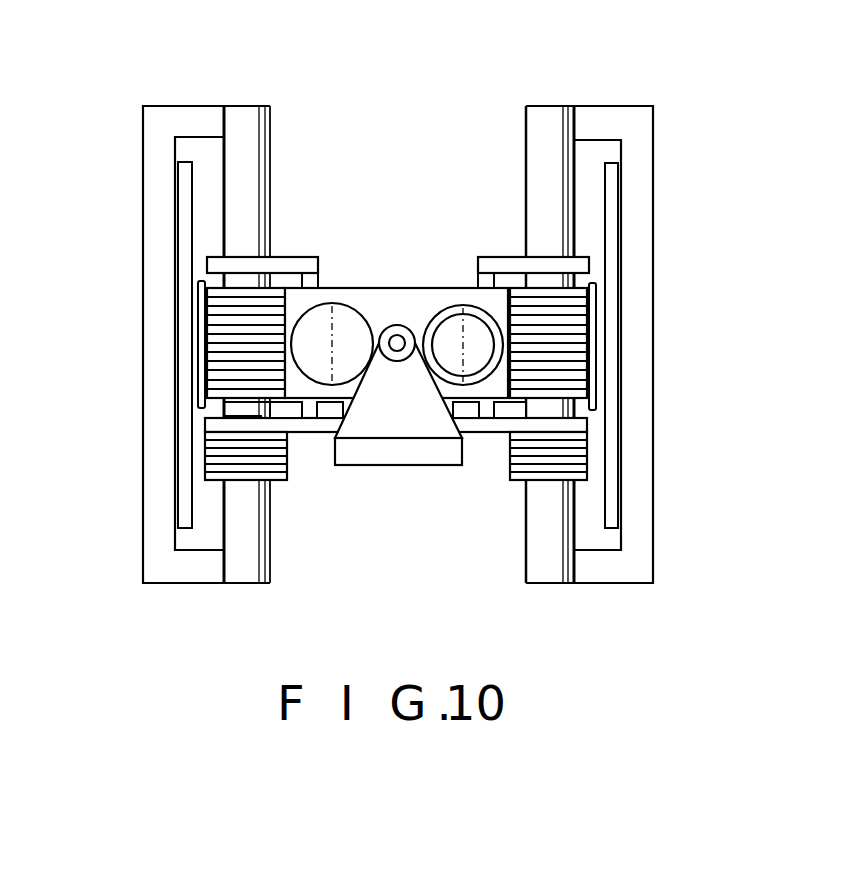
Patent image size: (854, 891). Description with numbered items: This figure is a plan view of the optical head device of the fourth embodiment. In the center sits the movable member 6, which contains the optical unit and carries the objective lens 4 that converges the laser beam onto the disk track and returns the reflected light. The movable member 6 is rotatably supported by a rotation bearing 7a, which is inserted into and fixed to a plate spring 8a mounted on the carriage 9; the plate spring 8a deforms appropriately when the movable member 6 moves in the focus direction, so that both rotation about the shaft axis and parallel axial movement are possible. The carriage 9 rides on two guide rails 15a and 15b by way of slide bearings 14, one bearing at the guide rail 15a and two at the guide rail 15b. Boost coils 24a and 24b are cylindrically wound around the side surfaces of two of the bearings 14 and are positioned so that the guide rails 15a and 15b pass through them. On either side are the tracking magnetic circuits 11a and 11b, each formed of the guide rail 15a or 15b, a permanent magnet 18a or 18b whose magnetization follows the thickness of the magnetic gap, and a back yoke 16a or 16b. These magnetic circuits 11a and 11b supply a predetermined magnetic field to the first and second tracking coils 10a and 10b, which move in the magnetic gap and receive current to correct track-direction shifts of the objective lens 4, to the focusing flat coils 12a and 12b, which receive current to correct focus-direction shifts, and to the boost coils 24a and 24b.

The tracking magnetic circuit 11b is at (234, 293).
The tracking magnetic circuit 11a is at (567, 293).
The guide rail 15b is at (267, 107).
The guide rail 15a is at (540, 108).
The slide bearing 14 is at (400, 357).
The carriage 9 is at (298, 257).
The second tracking coil 10b is at (222, 323).
The first tracking coil 10a is at (570, 313).
The focusing flat coil 12b is at (196, 337).
The focusing flat coil 12a is at (597, 335).
The permanent magnet 18b is at (178, 397).
The permanent magnet 18a is at (615, 377).
The back yoke 16b is at (153, 478).
The back yoke 16a is at (640, 470).
The boost coil 24b is at (273, 467).
The boost coil 24a is at (518, 470).
The rotation bearing 7a is at (397, 325).
The objective lens 4 is at (462, 313).
The movable member 6 is at (491, 377).
The plate spring 8a is at (382, 413).